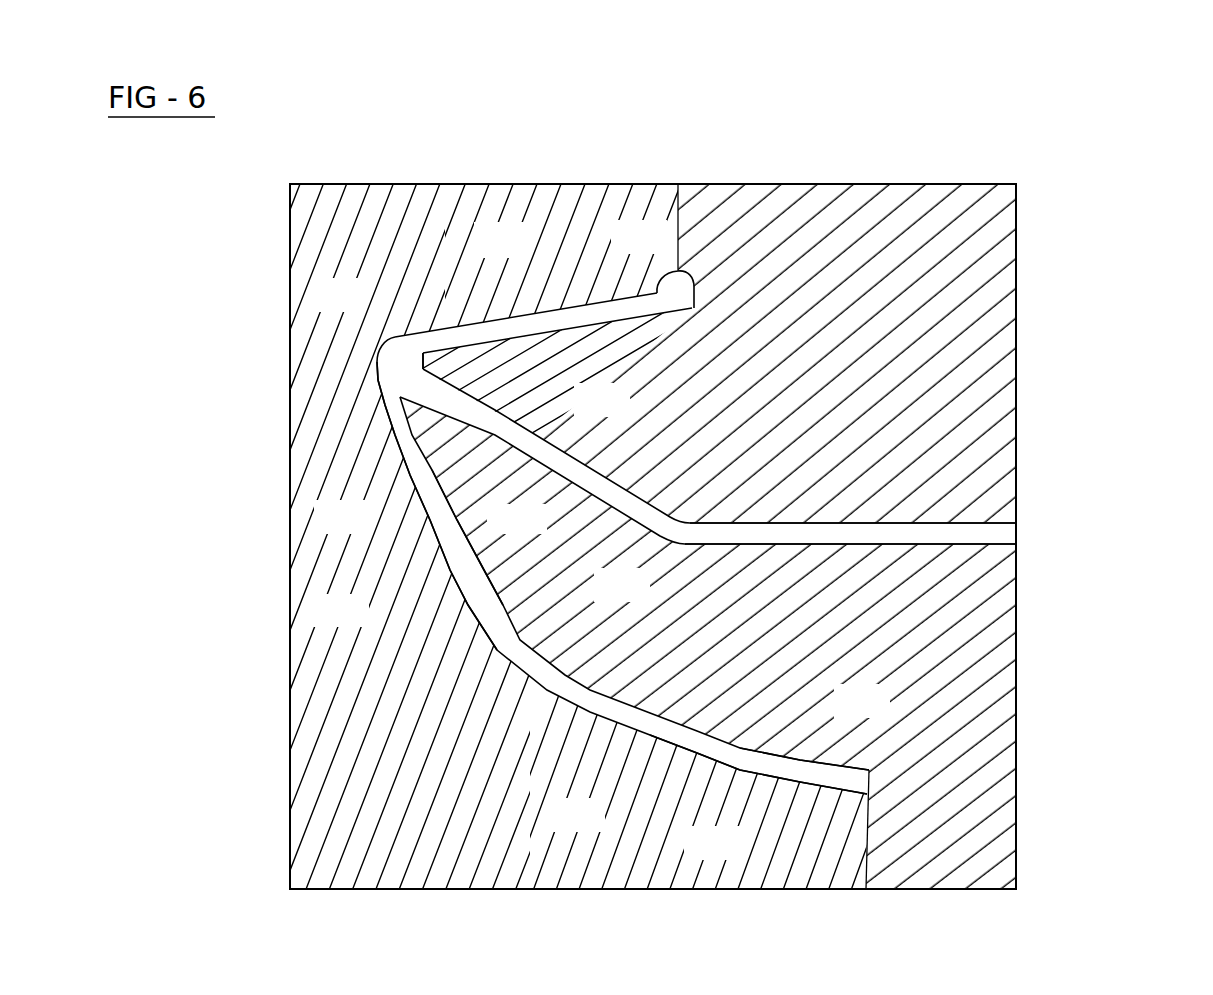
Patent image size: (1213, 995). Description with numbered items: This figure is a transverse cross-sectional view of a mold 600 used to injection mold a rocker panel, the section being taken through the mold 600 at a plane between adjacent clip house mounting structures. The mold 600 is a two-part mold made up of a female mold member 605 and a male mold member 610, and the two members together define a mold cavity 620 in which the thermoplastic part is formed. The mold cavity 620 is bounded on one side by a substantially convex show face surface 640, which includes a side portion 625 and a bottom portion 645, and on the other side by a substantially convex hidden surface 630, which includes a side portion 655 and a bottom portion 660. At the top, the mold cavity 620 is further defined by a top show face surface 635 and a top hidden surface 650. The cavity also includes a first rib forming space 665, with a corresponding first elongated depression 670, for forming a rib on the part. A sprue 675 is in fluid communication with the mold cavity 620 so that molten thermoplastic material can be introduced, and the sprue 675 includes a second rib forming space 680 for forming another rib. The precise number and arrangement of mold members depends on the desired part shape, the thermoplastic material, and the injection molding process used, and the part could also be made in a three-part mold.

The mold 600 is at (1050, 228).
The female mold member 605 is at (386, 782).
The male mold member 610 is at (888, 311).
The mold cavity 620 is at (643, 722).
The side portion 625 is at (423, 485).
The hidden surface 630 is at (482, 589).
The top show face surface 635 is at (500, 330).
The show face surface 640 is at (487, 632).
The bottom portion 645 is at (765, 770).
The top hidden surface 650 is at (590, 327).
The side portion 655 is at (473, 538).
The bottom portion 660 is at (812, 760).
The first rib forming space 665 is at (390, 350).
The first elongated depression 670 is at (422, 368).
The sprue 675 is at (1018, 537).
The second rib forming space 680 is at (658, 278).